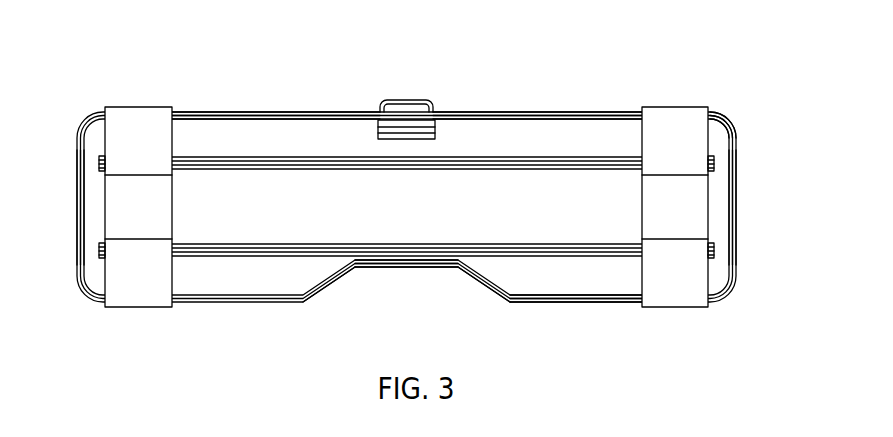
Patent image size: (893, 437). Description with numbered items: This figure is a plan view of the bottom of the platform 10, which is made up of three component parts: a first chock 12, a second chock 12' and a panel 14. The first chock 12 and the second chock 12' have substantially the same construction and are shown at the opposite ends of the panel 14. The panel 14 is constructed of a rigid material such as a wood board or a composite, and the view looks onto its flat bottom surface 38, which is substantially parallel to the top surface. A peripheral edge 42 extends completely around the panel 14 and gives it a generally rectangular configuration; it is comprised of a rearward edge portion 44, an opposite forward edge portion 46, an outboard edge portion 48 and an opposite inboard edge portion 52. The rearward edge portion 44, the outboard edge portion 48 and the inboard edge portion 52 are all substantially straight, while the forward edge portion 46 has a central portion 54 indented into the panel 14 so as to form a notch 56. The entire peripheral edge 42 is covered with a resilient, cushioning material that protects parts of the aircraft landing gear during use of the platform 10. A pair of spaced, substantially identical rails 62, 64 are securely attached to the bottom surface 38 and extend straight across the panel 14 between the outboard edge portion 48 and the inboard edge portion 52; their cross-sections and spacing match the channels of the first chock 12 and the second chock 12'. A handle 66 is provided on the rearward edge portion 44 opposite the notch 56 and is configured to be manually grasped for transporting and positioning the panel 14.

The platform 10 is at (508, 57).
The first chock 12 is at (129, 179).
The second chock 12' is at (697, 184).
The panel 14 is at (248, 110).
The bottom surface 38 is at (342, 128).
The peripheral edge 42 is at (733, 118).
The rearward edge portion 44 is at (560, 112).
The forward edge portion 46 is at (560, 303).
The outboard edge portion 48 is at (77, 200).
The inboard edge portion 52 is at (737, 207).
The central portion 54 is at (392, 266).
The notch 56 is at (405, 292).
The rail 62 is at (560, 162).
The rail 64 is at (242, 256).
The handle 66 is at (412, 100).